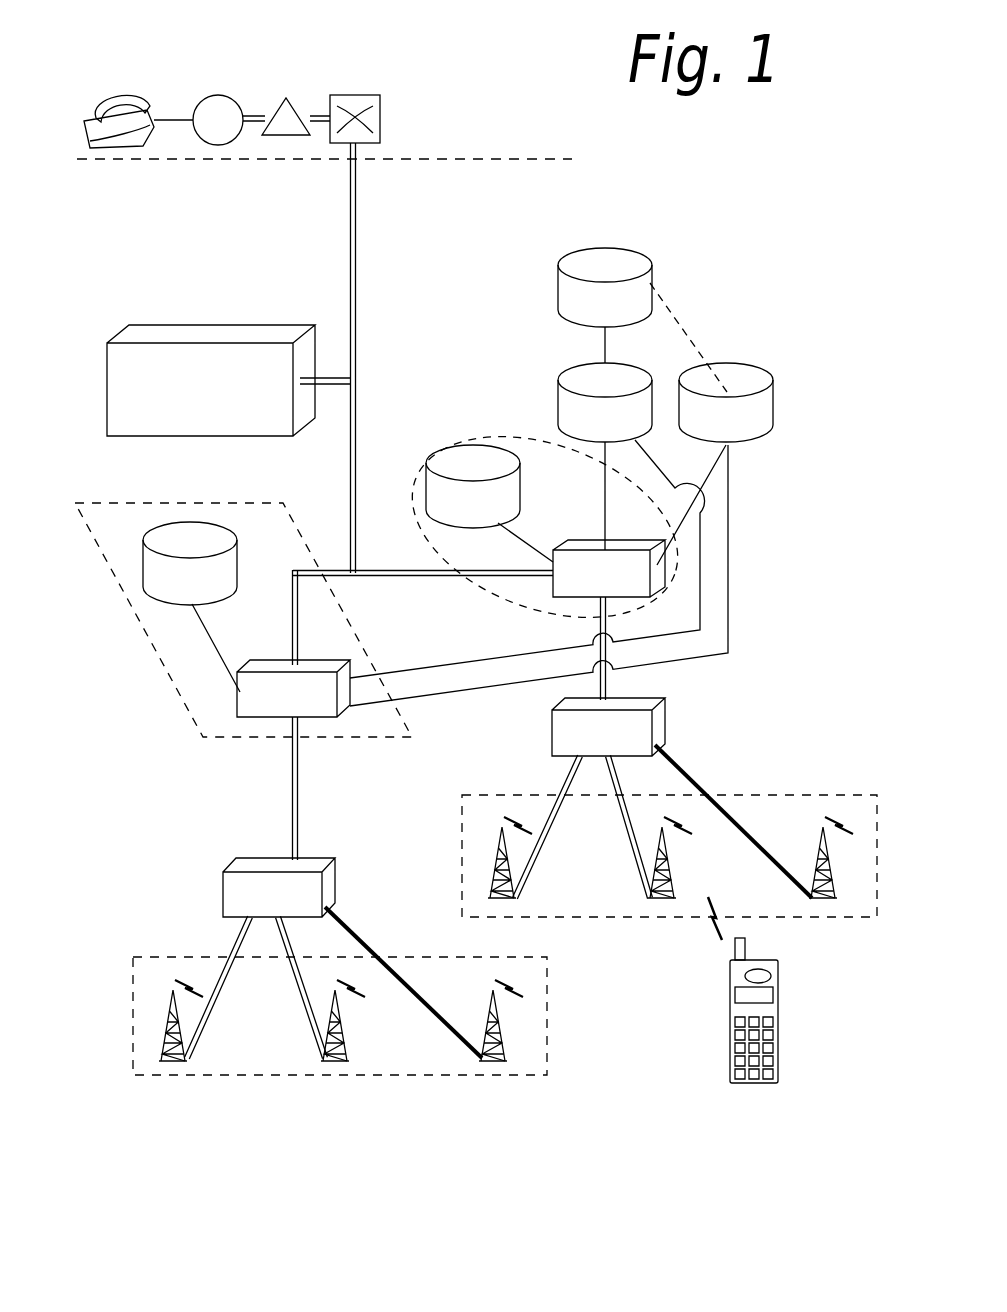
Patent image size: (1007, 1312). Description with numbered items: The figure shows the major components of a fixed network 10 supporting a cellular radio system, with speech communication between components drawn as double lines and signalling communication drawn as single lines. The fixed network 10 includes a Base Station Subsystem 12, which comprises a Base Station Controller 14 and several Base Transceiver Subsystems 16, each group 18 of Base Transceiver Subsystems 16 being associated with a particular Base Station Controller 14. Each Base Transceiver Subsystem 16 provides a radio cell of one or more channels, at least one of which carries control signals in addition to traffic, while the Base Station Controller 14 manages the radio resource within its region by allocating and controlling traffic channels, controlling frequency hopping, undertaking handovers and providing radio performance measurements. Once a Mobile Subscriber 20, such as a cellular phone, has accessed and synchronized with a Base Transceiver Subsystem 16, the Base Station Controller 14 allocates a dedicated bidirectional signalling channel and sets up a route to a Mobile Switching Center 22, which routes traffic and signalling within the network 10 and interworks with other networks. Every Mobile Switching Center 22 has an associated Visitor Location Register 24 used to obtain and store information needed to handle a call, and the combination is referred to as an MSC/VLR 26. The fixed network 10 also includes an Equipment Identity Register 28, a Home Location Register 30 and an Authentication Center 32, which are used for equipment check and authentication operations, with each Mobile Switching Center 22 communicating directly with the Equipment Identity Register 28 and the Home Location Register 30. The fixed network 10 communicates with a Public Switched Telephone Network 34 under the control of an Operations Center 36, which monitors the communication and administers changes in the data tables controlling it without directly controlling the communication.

The fixed network 10 is at (764, 236).
The Base Station Subsystem 12 is at (483, 928).
The Base Station Controller 14 is at (652, 716).
The Base Transceiver Subsystem 16 is at (507, 862).
The group of BTSs 18 is at (853, 918).
The Mobile Subscriber 20 is at (778, 1058).
The Mobile Switching Center 22 is at (582, 548).
The Visitor Location Register 24 is at (465, 526).
The MSC/VLR 26 is at (483, 433).
The Equipment Identity Register 28 is at (773, 405).
The Home Location Register 30 is at (580, 376).
The Authentication Center 32 is at (645, 252).
The Public Switched Telephone Network 34 is at (418, 71).
The Operations Center 36 is at (195, 325).